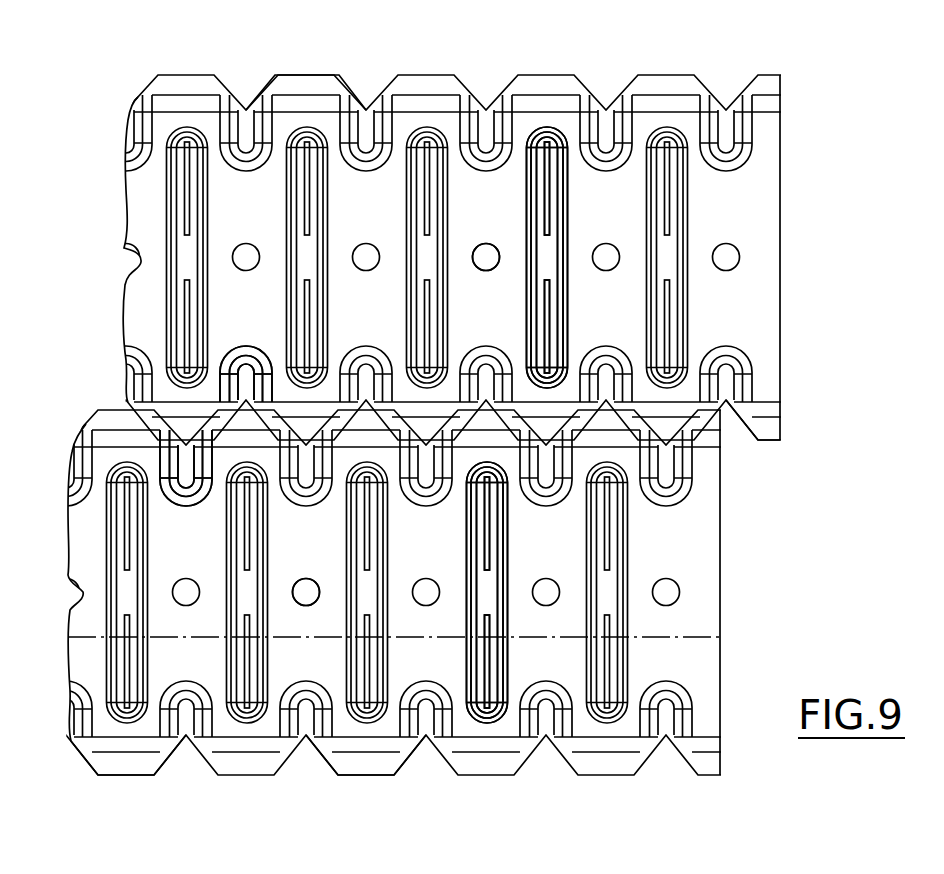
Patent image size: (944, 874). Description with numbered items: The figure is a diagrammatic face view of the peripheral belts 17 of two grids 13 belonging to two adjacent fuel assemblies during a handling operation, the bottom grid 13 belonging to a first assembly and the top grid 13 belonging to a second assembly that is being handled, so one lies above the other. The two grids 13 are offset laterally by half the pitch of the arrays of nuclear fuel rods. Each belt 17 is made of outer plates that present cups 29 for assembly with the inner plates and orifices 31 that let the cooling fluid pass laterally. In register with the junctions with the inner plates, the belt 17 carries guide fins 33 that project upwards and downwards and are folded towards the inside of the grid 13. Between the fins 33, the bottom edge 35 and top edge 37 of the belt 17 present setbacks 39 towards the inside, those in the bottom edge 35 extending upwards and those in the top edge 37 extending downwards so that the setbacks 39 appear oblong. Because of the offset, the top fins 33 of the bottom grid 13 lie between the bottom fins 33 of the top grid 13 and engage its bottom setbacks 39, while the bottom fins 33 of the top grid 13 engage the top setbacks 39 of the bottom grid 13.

The grid 13 is at (744, 207).
The peripheral belt 17 is at (747, 311).
The cups 29 is at (660, 243).
The orifices 31 is at (475, 252).
The fins 33 is at (407, 83).
The bottom edge 35 is at (737, 430).
The top edge 37 is at (146, 87).
The setbacks 39 is at (246, 371).